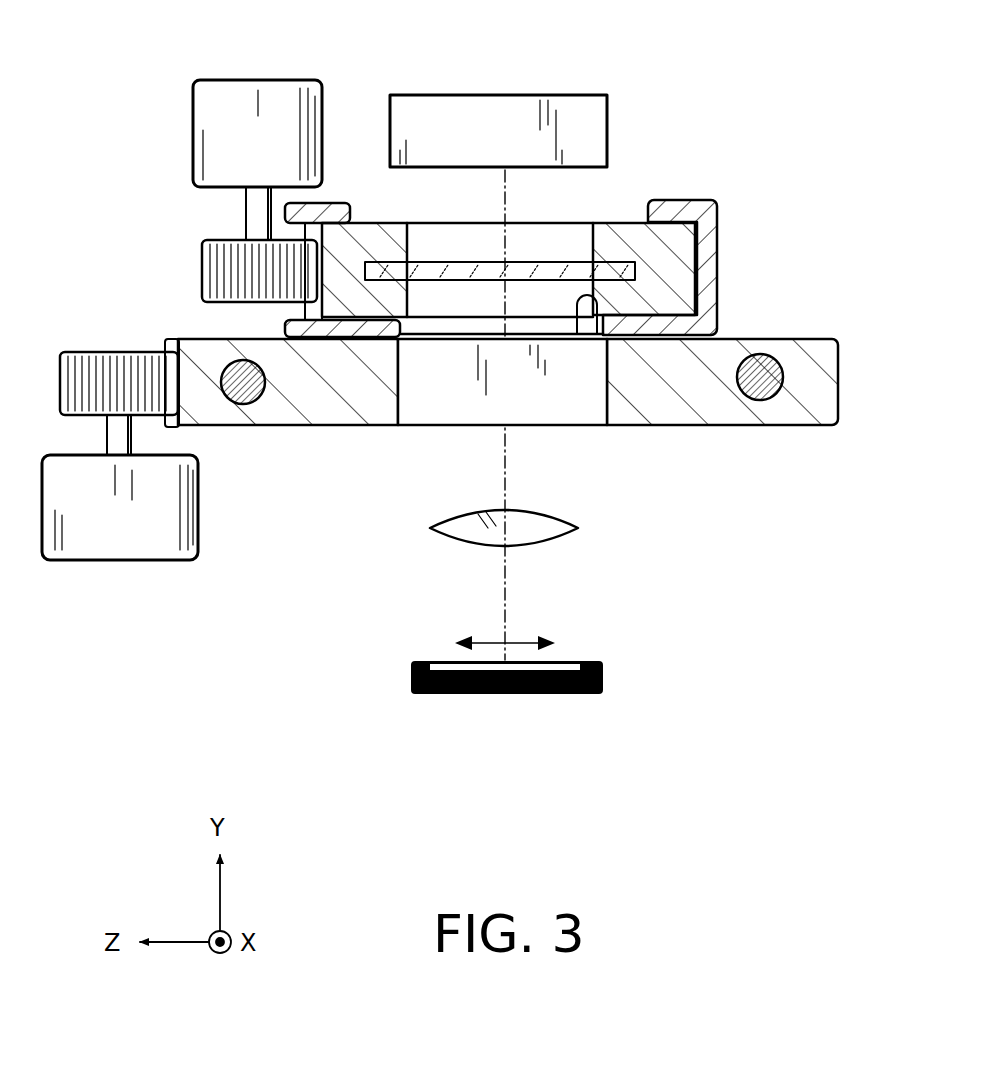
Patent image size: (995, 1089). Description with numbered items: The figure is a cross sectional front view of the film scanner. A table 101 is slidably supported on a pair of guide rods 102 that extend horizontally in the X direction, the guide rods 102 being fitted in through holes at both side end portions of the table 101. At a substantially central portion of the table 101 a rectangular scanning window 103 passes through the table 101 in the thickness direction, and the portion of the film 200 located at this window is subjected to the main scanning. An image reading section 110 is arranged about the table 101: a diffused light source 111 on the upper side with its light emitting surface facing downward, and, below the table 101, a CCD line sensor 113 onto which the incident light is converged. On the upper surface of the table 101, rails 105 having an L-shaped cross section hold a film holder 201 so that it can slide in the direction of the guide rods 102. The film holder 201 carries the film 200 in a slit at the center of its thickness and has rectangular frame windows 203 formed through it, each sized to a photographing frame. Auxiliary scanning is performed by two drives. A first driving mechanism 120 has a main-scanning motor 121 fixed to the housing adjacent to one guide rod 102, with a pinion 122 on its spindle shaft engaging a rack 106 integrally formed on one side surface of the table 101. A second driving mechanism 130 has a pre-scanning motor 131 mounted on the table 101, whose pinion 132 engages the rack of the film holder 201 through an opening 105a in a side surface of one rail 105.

The table 101 is at (665, 407).
The guide rods 102 is at (758, 377).
The scanning window 103 is at (425, 393).
The rails 105 is at (707, 268).
The opening 105a is at (290, 307).
The rack 106 is at (173, 427).
The image reading section 110 is at (650, 92).
The diffused light source 111 is at (468, 103).
The CCD line sensor 113 is at (645, 685).
The first driving mechanism 120 is at (225, 532).
The main-scanning motor 121 is at (118, 540).
The pinion 122 is at (106, 360).
The second driving mechanism 130 is at (252, 79).
The pre-scanning motor 131 is at (215, 136).
The pinion 132 is at (208, 272).
The film 200 is at (487, 258).
The film holder 201 is at (612, 228).
The frame windows 203 is at (578, 334).